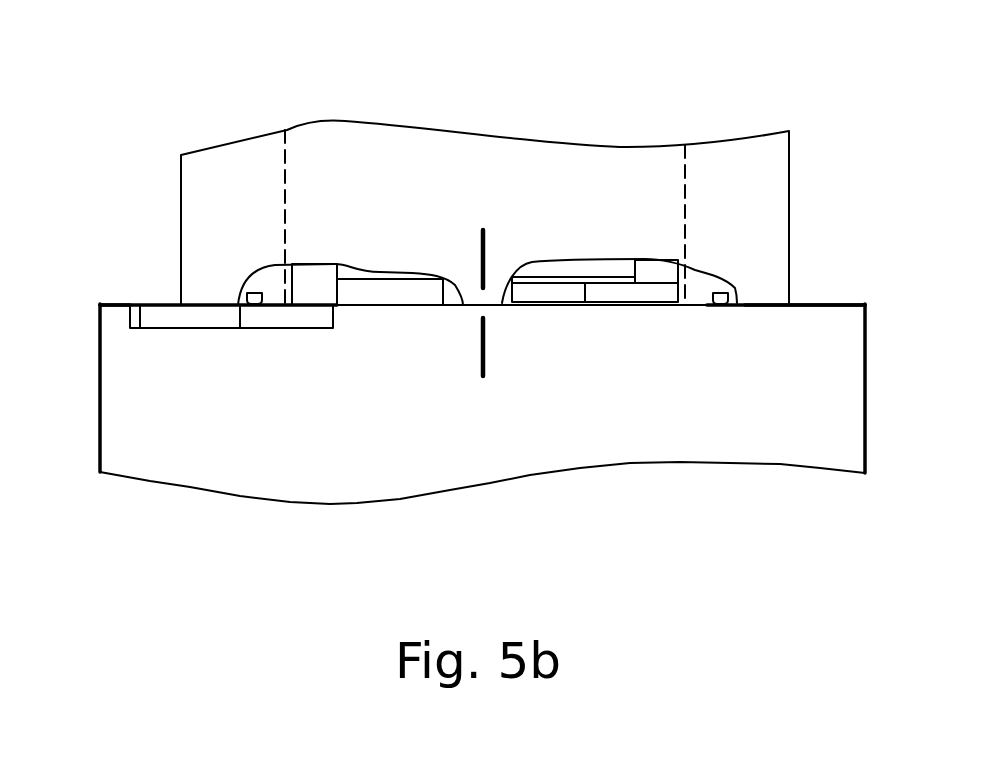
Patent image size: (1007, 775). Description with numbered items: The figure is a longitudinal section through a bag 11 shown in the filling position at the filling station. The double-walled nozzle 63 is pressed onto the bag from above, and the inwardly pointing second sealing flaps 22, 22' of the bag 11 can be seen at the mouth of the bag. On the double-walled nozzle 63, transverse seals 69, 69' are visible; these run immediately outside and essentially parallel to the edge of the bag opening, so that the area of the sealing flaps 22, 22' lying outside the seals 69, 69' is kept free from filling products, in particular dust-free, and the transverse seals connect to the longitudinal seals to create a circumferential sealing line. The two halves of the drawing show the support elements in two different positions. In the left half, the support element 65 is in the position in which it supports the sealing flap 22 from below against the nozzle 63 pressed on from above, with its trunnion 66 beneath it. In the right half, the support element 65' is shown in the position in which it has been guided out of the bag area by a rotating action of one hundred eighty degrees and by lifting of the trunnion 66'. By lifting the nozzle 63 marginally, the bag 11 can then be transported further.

The bag 11 is at (548, 440).
The second sealing flap 22 is at (100, 242).
The second sealing flap 22' is at (808, 244).
The double-walled nozzle 63 is at (393, 153).
The support element 65 is at (231, 427).
The support element 65' is at (595, 351).
The trunnion 66 is at (367, 372).
The trunnion 66' is at (645, 185).
The transverse seal 69 is at (281, 357).
The transverse seal 69' is at (698, 371).